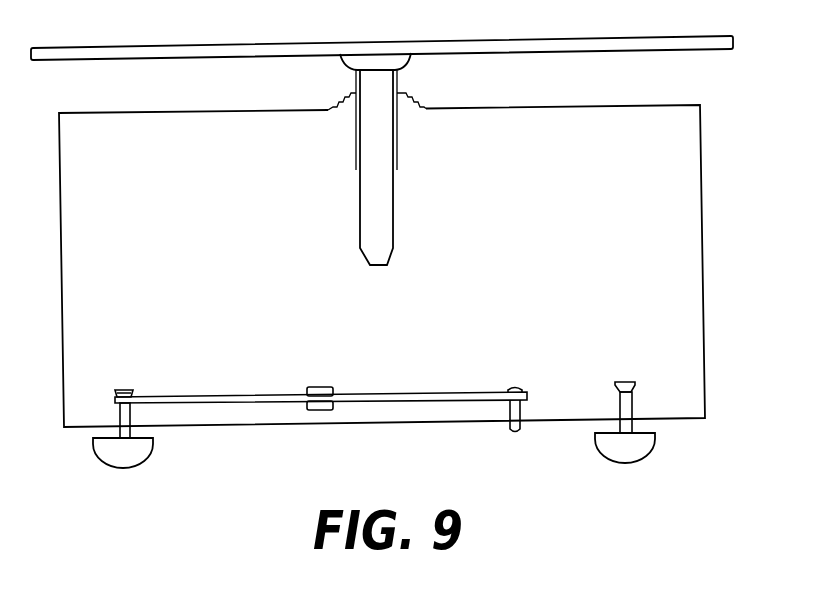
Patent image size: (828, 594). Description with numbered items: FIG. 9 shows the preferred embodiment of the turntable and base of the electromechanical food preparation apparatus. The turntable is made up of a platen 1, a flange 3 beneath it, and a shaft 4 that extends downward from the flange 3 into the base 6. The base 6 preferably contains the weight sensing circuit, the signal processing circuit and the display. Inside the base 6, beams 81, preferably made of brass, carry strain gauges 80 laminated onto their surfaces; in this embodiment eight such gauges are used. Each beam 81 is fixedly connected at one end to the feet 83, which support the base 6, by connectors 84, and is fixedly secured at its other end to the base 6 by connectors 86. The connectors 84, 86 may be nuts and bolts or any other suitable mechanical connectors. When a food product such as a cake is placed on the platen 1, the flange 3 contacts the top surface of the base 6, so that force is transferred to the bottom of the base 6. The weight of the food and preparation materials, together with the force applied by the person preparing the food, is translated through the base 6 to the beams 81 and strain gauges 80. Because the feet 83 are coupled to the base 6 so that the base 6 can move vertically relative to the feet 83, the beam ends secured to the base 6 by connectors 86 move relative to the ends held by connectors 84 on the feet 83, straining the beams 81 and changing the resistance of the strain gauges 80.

The platen 1 is at (550, 40).
The flange 3 is at (402, 62).
The shaft 4 is at (388, 207).
The base 6 is at (618, 105).
The strain gauges 80 is at (318, 387).
The beams 81 is at (415, 393).
The feet 83 is at (123, 465).
The connectors 84 is at (121, 390).
The connectors 86 is at (515, 388).